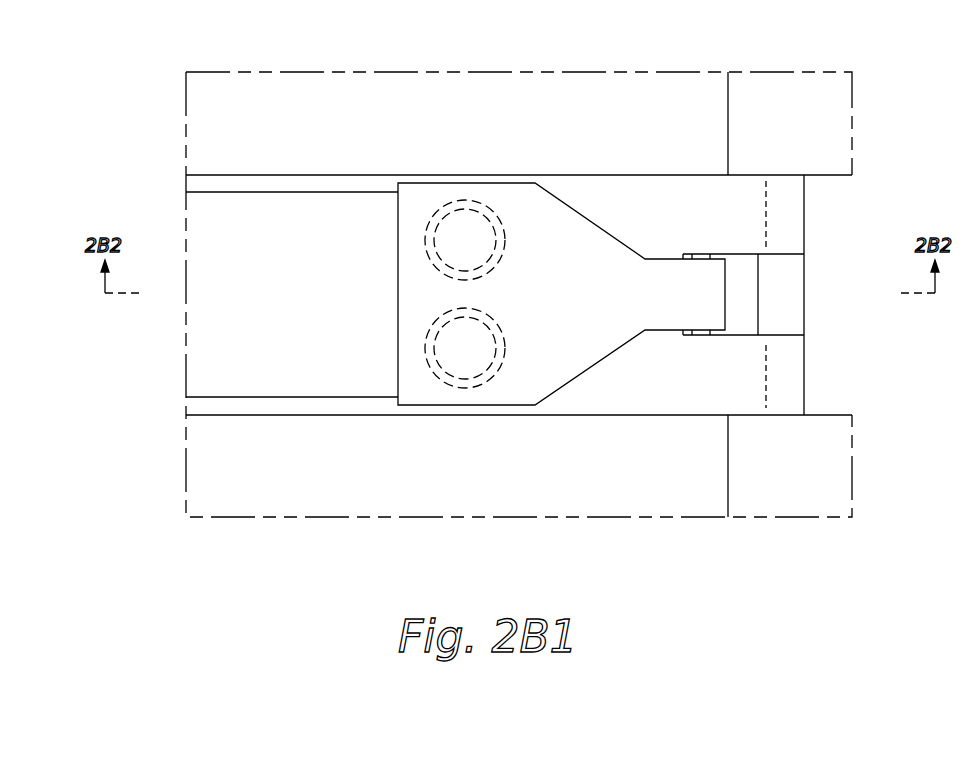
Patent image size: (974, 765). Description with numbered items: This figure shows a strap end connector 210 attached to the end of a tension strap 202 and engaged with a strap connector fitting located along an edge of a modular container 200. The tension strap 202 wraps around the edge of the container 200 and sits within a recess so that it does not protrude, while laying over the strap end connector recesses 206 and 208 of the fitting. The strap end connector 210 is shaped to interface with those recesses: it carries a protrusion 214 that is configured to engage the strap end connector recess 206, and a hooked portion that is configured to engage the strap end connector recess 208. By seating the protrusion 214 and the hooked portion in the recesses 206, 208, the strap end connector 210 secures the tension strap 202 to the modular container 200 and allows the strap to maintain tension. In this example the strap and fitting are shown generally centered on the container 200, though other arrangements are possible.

The modular container 200 is at (790, 84).
The tension strap 202 is at (250, 215).
The strap end connector recess 206 is at (505, 238).
The strap end connector recess 208 is at (790, 293).
The strap end connector 210 is at (610, 243).
The protrusion 214 is at (496, 262).